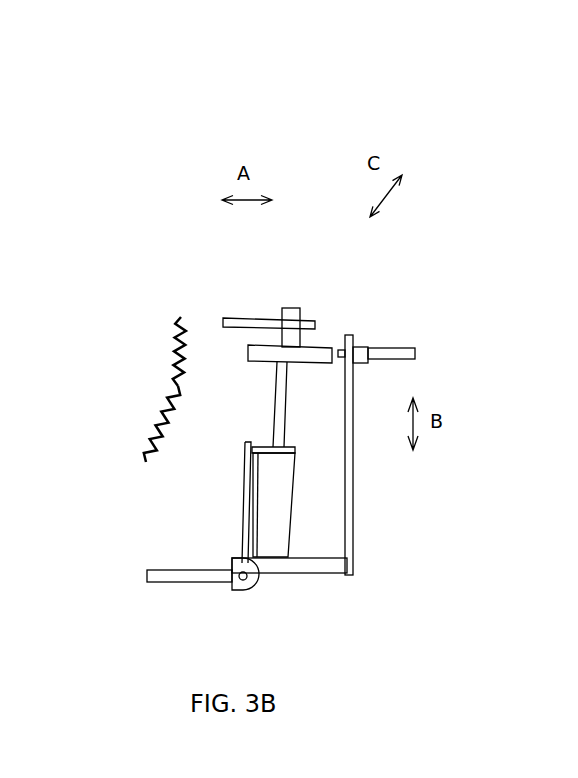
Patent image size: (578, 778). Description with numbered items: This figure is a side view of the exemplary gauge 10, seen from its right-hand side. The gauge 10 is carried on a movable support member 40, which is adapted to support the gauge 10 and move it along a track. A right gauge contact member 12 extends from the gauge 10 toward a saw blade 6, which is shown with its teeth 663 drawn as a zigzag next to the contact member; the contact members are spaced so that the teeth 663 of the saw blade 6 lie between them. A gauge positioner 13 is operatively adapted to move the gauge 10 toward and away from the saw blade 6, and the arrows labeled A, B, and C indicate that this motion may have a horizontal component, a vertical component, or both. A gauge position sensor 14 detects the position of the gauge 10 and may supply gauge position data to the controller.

The gauge 10 is at (450, 118).
The right gauge contact member 12 is at (232, 318).
The gauge positioner 13 is at (253, 483).
The gauge position sensor 14 is at (405, 348).
The movable support member 40 is at (158, 577).
The saw blade 6 is at (150, 425).
The teeth 663 is at (187, 398).